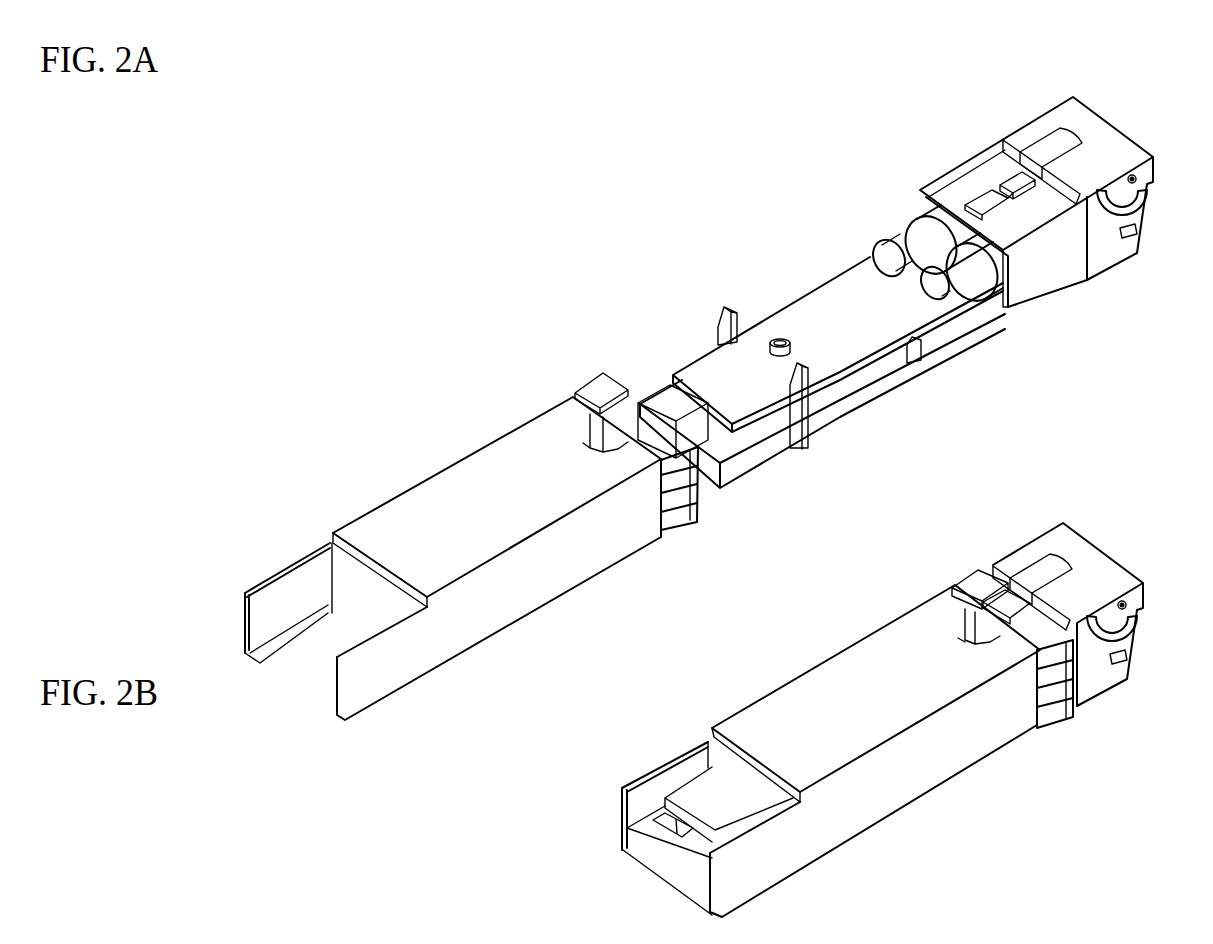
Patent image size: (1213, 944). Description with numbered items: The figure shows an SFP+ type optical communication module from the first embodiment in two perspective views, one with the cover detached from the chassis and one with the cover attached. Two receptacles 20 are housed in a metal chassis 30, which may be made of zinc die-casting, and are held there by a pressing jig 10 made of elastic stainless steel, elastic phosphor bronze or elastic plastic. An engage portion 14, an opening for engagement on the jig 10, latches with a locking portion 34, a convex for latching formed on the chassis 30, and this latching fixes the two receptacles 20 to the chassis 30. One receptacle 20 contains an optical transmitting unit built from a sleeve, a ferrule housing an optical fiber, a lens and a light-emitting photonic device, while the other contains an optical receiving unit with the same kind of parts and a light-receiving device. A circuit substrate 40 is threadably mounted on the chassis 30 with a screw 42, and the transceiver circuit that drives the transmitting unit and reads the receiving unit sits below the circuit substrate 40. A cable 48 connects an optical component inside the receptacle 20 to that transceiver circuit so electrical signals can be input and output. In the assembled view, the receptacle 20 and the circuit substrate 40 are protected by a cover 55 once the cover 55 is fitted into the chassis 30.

In FIG. 2A, the jig 10 is at (988, 175).
In FIG. 2B, the jig 10 is at (1037, 592).
In FIG. 2A, the engage portion 14 is at (977, 200).
In FIG. 2B, the engage portion 14 is at (980, 618).
In FIG. 2A, the receptacle 20 is at (907, 247).
In FIG. 2A, the chassis 30 is at (1113, 143).
In FIG. 2B, the chassis 30 is at (1088, 558).
In FIG. 2A, the locking portion 34 is at (1027, 180).
In FIG. 2B, the locking portion 34 is at (1016, 603).
In FIG. 2A, the circuit substrate 40 is at (822, 293).
In FIG. 2A, the screw 42 is at (780, 339).
In FIG. 2A, the cable 48 is at (877, 253).
In FIG. 2A, the cover 55 is at (545, 425).
In FIG. 2B, the cover 55 is at (853, 667).